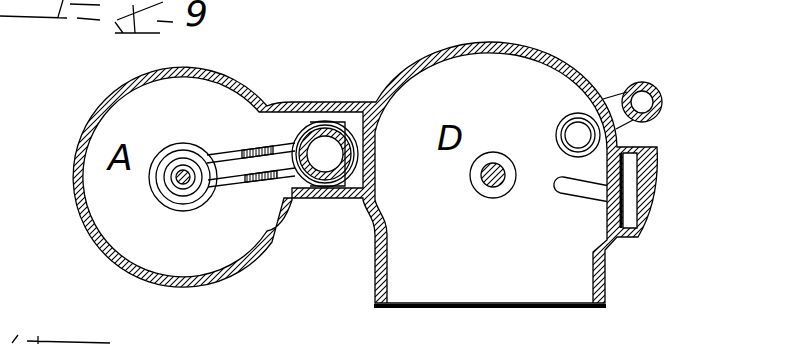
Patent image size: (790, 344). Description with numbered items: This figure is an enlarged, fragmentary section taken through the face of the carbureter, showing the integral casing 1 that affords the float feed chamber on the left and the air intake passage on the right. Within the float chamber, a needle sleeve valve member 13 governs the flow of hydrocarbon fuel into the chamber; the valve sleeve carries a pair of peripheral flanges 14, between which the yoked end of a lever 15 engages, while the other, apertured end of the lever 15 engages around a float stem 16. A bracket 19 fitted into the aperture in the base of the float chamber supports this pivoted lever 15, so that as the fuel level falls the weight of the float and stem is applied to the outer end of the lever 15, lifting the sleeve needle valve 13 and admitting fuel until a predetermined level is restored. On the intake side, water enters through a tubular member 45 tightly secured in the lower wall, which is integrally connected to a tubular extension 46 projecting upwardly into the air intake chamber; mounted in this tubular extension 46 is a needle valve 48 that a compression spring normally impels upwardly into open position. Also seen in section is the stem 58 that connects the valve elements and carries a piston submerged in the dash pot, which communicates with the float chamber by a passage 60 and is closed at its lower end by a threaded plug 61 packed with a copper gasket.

The casing 1 is at (360, 200).
The needle sleeve valve member 13 is at (325, 130).
The peripheral flanges 14 is at (358, 136).
The yoked lever 15 is at (231, 170).
The float stem 16 is at (183, 180).
The bracket 19 is at (223, 152).
The tubular member 45 is at (656, 116).
The tubular extension 46 is at (560, 125).
The needle valve 48 is at (583, 128).
The stem 58 is at (495, 183).
The passage 60 is at (590, 185).
The threaded plug 61 is at (392, 4).